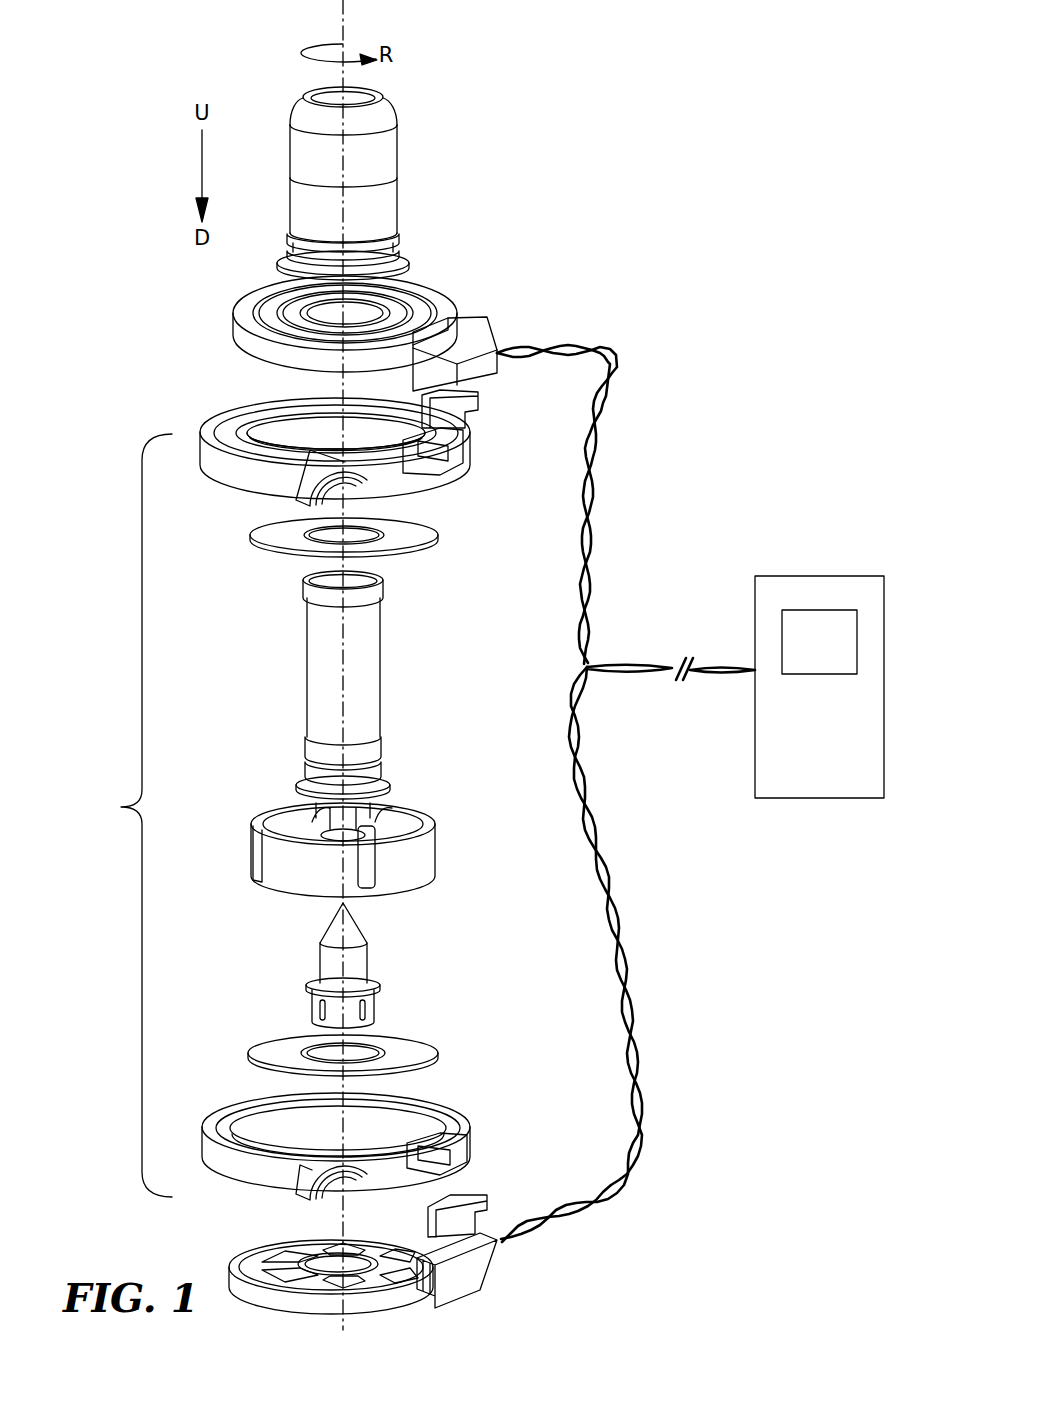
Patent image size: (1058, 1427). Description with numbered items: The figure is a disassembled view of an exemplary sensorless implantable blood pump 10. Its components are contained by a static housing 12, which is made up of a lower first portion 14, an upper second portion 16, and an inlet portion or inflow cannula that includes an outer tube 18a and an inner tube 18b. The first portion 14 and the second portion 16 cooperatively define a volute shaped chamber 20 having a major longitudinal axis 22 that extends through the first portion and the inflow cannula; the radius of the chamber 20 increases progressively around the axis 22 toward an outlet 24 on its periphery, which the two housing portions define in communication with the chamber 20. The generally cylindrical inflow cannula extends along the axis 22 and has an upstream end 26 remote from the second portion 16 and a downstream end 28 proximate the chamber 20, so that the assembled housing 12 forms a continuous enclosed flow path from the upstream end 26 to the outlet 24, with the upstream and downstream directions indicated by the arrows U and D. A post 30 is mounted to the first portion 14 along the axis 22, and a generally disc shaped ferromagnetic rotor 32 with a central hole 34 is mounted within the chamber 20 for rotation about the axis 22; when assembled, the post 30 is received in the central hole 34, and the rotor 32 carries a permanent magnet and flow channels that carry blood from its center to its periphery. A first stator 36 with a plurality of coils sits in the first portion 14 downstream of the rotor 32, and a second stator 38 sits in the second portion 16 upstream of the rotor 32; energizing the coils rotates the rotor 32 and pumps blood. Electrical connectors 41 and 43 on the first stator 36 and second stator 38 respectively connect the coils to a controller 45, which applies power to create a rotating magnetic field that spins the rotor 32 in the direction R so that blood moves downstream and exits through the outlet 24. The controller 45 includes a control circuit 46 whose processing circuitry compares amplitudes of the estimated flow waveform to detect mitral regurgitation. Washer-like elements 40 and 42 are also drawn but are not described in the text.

The blood pump 10 is at (578, 190).
The housing 12 is at (128, 815).
The first portion 14 is at (390, 1151).
The second portion 16 is at (465, 450).
The outer tube 18a is at (406, 157).
The inner tube 18b is at (380, 707).
The volute shaped chamber 20 is at (400, 1117).
The major longitudinal axis 22 is at (343, 23).
The outlet 24 is at (360, 1180).
The upstream end 26 is at (368, 96).
The downstream end 28 is at (400, 268).
The post 30 is at (367, 962).
The rotor 32 is at (388, 820).
The central hole 34 is at (355, 838).
The first stator 36 is at (482, 1290).
The second stator 38 is at (480, 312).
The lower washer 40 is at (415, 1052).
The electrical connector 41 is at (564, 1218).
The upper washer 42 is at (410, 533).
The electrical connector 43 is at (605, 347).
The controller 45 is at (819, 687).
The control circuit 46 is at (819, 642).